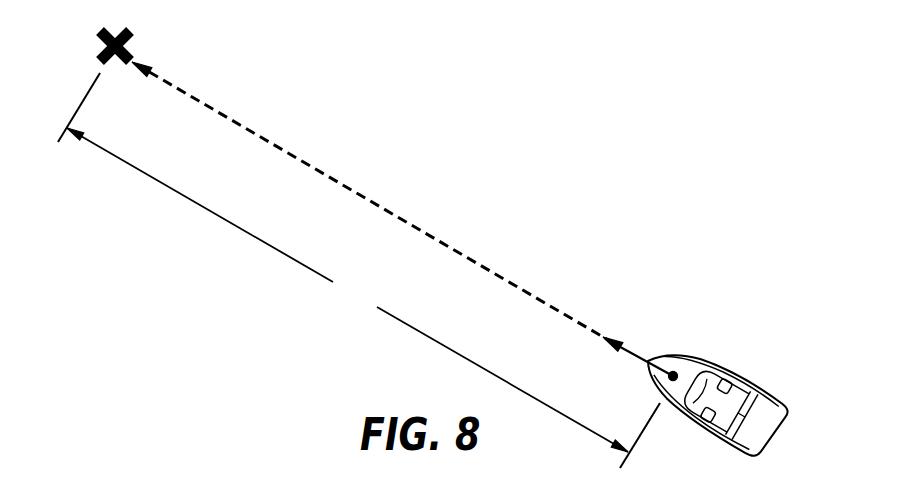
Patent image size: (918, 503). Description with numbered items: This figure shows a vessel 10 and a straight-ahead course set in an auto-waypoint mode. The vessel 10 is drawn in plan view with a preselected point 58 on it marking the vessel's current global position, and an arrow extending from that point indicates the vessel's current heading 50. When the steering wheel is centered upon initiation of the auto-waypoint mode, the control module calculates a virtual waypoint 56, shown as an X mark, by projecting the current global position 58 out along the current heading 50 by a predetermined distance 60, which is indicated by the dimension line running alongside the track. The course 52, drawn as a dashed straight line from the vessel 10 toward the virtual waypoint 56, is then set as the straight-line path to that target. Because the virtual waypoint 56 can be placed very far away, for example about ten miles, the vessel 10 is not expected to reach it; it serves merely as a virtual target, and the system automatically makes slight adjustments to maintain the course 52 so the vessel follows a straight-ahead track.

The vessel 10 is at (777, 348).
The current heading 50 is at (648, 361).
The course 52 is at (367, 145).
The virtual waypoint 56 is at (178, 33).
The preselected point 58 is at (705, 320).
The predetermined distance 60 is at (359, 270).